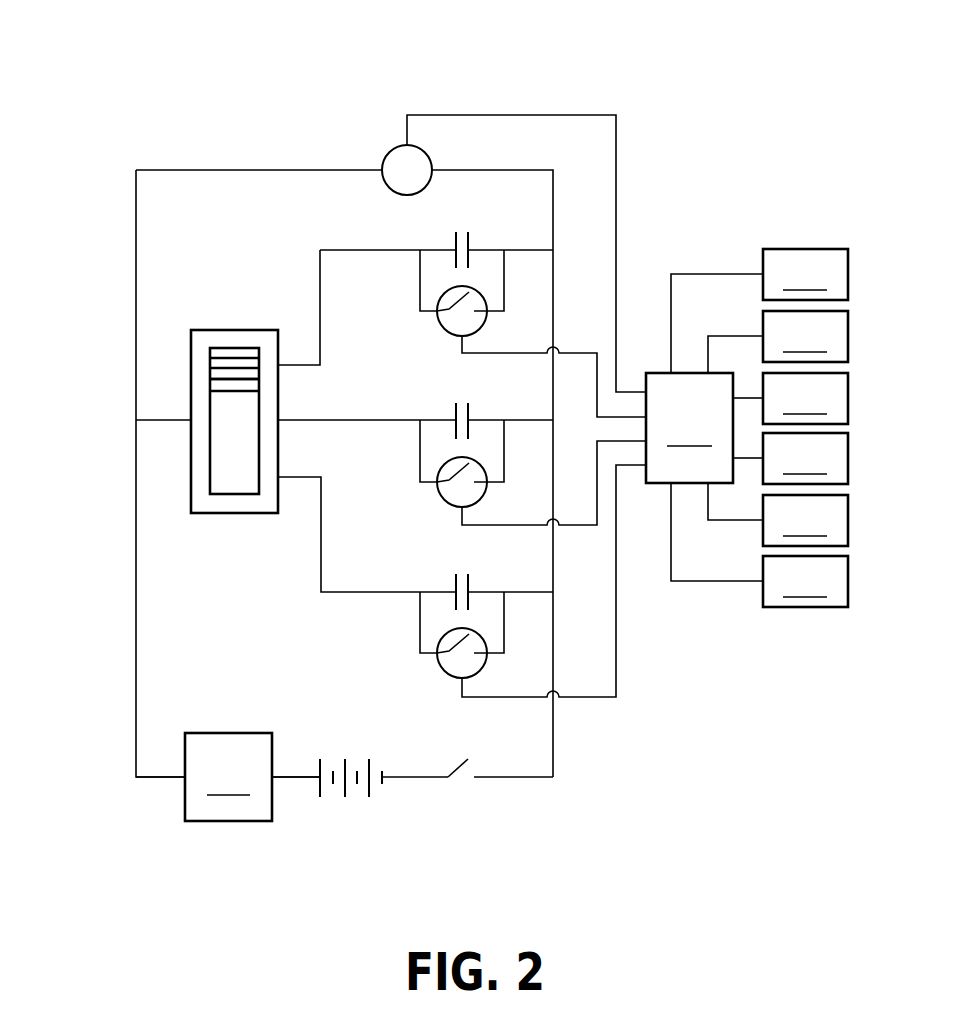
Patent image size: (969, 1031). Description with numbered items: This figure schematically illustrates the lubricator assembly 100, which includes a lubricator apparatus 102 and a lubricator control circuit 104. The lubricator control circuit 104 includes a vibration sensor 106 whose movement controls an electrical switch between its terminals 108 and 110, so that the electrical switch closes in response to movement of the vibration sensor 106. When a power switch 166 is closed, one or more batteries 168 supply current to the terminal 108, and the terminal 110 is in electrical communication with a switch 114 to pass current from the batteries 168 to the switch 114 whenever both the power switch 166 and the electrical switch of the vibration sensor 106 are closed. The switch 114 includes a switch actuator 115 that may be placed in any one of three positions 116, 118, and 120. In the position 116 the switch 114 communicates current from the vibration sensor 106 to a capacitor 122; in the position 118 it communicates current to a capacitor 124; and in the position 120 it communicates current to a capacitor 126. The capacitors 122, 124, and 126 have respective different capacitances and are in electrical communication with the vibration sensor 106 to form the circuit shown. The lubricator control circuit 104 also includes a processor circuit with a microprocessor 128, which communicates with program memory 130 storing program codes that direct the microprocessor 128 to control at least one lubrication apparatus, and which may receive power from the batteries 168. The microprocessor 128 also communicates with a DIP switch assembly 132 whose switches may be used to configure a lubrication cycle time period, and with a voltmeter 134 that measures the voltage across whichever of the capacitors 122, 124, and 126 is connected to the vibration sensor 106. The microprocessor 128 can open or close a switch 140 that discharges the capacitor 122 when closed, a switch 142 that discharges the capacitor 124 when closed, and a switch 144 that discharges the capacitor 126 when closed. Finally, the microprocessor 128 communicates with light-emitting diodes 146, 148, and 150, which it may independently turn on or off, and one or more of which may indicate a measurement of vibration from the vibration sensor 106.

The lubricator assembly 100 is at (745, 52).
The lubricator apparatus 102 is at (759, 545).
The lubricator control circuit 104 is at (110, 92).
The vibration sensor 106 is at (228, 777).
The terminal 108 is at (272, 777).
The terminal 110 is at (185, 777).
The switch 114 is at (233, 330).
The switch actuator 115 is at (220, 374).
The position 116 is at (283, 376).
The position 118 is at (257, 427).
The position 120 is at (233, 482).
The capacitor 122 is at (470, 238).
The capacitor 124 is at (456, 405).
The capacitor 126 is at (456, 578).
The microprocessor 128 is at (689, 428).
The program memory 130 is at (759, 311).
The DIP switch assembly 132 is at (778, 342).
The voltmeter 134 is at (388, 152).
The switch 140 is at (438, 324).
The switch 142 is at (438, 495).
The switch 144 is at (438, 666).
The light-emitting diode 146 is at (790, 398).
The light-emitting diode 148 is at (790, 458).
The light-emitting diode 150 is at (778, 514).
The power switch 166 is at (462, 759).
The batteries 168 is at (331, 757).